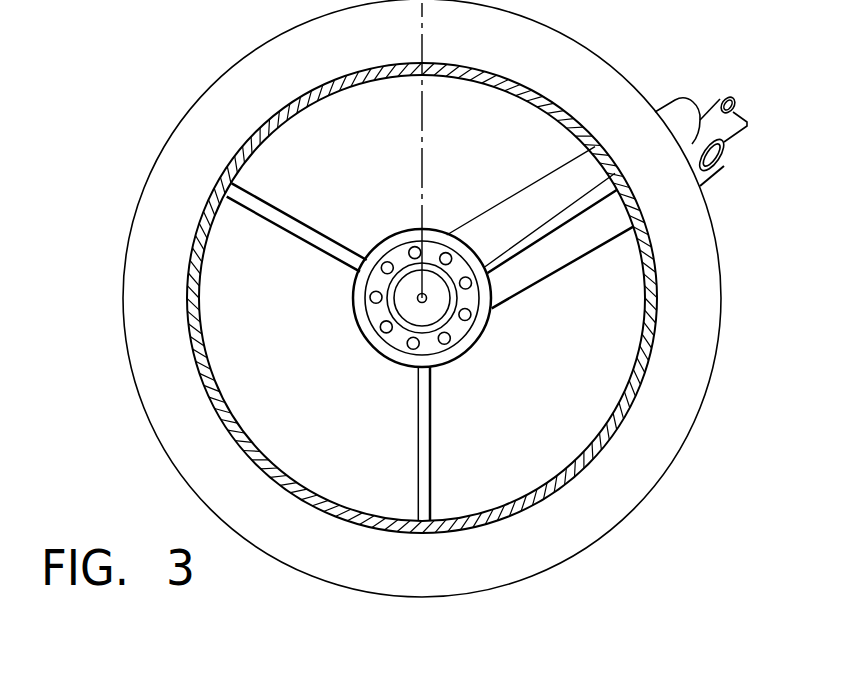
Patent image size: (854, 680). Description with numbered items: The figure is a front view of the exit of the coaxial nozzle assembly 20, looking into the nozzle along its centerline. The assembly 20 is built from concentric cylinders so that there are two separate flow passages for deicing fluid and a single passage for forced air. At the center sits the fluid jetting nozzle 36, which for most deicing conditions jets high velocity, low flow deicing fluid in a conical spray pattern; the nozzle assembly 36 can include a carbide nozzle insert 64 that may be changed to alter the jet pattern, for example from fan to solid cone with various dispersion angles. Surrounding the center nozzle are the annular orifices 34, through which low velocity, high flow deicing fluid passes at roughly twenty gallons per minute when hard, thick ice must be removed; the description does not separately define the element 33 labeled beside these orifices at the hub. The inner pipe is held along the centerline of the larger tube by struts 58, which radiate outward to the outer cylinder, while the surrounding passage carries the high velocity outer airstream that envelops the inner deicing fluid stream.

The coaxial nozzle assembly 20 is at (137, 151).
The hub 33 is at (466, 357).
The annular orifices 34 is at (442, 347).
The fluid jetting nozzle 36 is at (396, 290).
The struts 58 is at (270, 202).
The carbide nozzle insert 64 is at (414, 321).